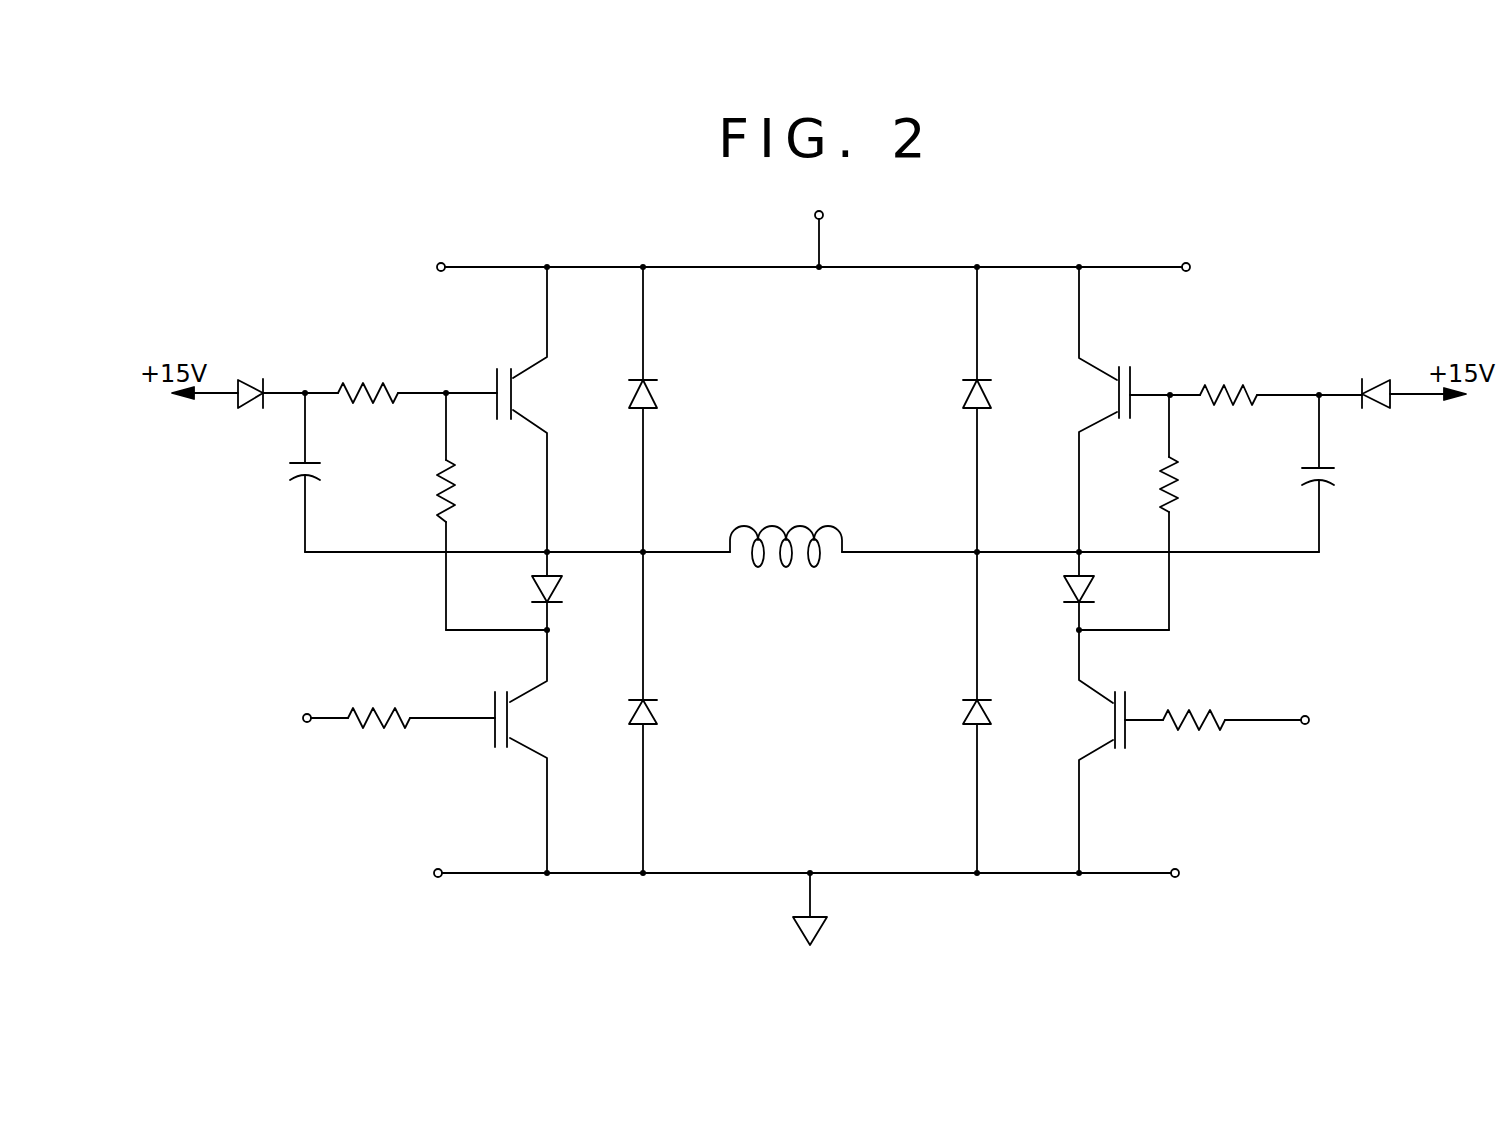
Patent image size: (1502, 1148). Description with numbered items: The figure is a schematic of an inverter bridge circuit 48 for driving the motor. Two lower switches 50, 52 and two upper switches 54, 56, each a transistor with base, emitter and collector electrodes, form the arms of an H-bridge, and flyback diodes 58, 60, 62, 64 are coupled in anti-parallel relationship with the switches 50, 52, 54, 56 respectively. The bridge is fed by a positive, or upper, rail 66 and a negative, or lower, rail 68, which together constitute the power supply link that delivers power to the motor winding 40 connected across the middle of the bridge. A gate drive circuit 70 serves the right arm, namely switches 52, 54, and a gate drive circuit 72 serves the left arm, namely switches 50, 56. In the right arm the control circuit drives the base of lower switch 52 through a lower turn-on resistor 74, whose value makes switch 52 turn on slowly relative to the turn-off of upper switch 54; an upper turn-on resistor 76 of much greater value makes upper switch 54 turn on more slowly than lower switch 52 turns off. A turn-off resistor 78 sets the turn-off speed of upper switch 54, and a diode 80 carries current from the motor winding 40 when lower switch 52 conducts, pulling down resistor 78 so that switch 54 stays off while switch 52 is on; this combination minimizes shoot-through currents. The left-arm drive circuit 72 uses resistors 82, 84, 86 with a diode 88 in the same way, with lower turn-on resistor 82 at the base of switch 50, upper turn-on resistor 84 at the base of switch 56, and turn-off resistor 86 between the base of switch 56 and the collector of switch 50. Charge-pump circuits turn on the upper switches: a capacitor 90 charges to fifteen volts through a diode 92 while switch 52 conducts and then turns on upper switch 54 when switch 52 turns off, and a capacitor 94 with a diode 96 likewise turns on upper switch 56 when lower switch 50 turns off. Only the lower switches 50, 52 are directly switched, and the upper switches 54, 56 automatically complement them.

The motor winding 40 is at (795, 533).
The inverter bridge circuit 48 is at (1182, 228).
The lower switch 50 is at (513, 745).
The lower switch 52 is at (1093, 750).
The upper switch 54 is at (1097, 362).
The upper switch 56 is at (532, 357).
The flyback diode 58 is at (650, 712).
The flyback diode 60 is at (968, 712).
The flyback diode 62 is at (968, 393).
The flyback diode 64 is at (660, 393).
The positive rail 66 is at (937, 267).
The negative rail 68 is at (716, 873).
The gate drive circuit 70 is at (1326, 298).
The gate drive circuit 72 is at (369, 296).
The lower turn-on resistor 74 is at (1210, 712).
The upper turn-on resistor 76 is at (1222, 385).
The turn-off resistor 78 is at (1178, 478).
The diode 80 is at (1068, 588).
The lower turn-on resistor 82 is at (372, 712).
The upper turn-on resistor 84 is at (367, 385).
The turn-off resistor 86 is at (440, 496).
The diode 88 is at (557, 586).
The capacitor 90 is at (1332, 479).
The diode 92 is at (1375, 385).
The capacitor 94 is at (288, 472).
The diode 96 is at (253, 378).